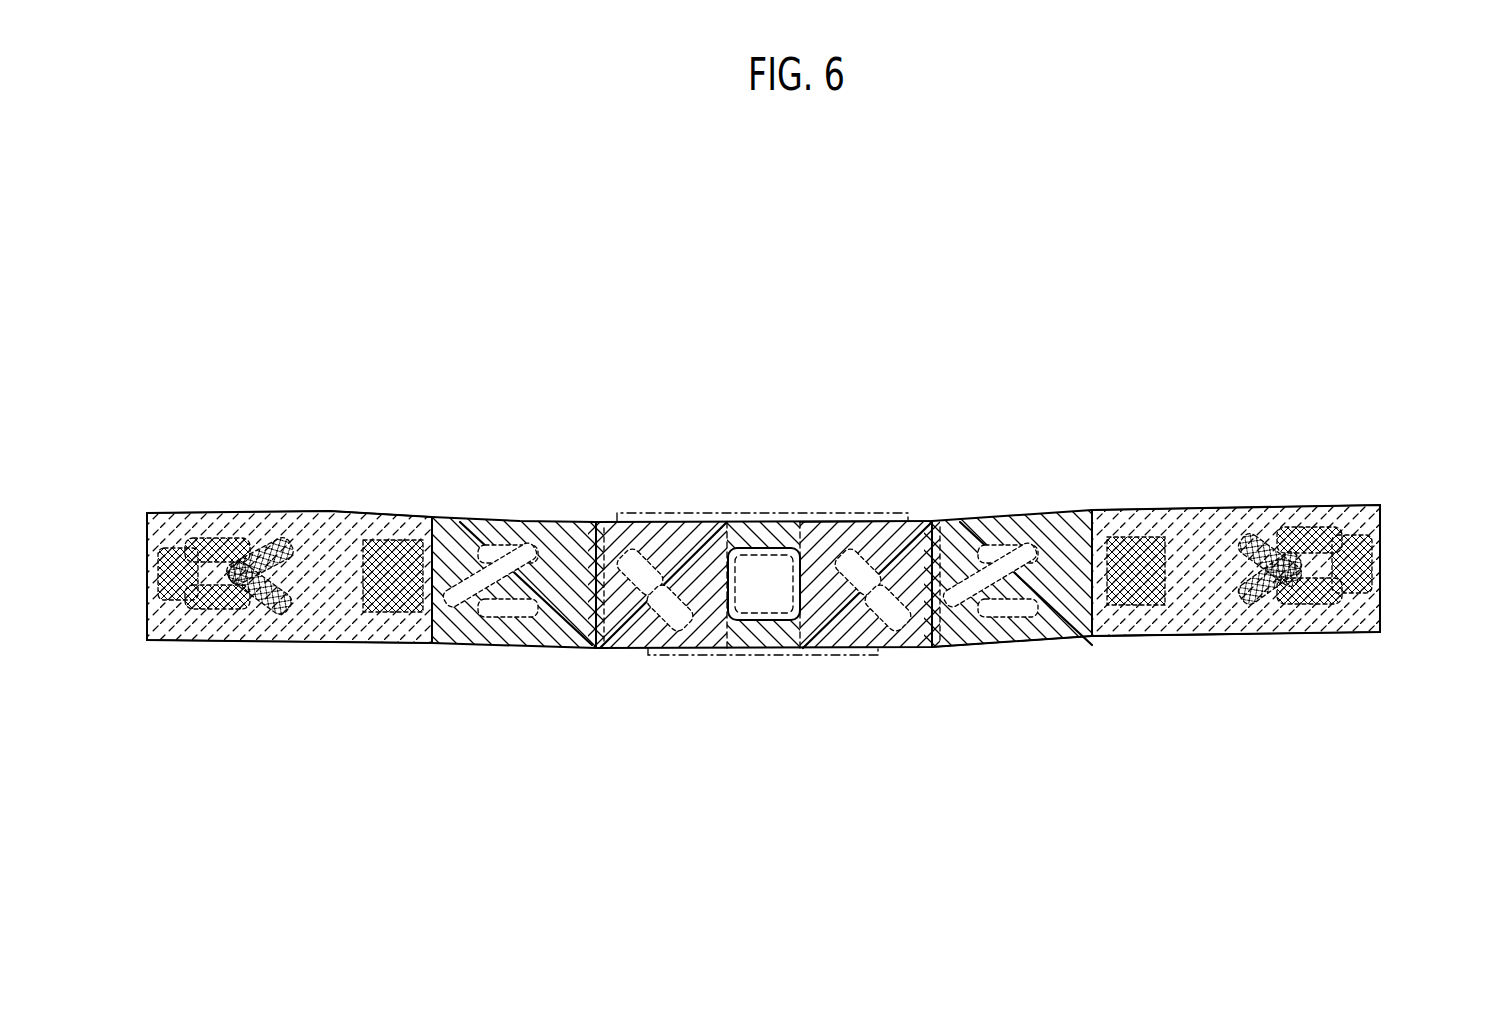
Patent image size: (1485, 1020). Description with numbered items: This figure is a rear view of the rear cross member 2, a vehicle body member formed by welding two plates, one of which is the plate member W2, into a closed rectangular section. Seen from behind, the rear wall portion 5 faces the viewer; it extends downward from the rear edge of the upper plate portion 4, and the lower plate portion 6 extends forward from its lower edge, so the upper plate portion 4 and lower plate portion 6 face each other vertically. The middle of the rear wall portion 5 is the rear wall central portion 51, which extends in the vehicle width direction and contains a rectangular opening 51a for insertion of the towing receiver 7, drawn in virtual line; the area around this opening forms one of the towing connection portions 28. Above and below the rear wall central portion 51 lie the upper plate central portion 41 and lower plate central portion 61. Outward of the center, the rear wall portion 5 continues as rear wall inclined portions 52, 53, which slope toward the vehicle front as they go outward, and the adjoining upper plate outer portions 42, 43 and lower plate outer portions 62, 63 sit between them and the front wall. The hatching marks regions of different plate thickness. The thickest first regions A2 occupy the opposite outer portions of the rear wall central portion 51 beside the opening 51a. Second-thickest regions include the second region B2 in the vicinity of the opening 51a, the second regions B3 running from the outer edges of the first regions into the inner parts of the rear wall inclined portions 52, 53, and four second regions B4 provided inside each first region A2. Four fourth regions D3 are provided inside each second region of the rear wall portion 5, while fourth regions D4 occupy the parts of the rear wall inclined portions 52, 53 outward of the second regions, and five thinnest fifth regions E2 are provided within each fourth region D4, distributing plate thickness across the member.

The rear cross member 2 is at (364, 402).
The upper plate portion 4 is at (1028, 503).
The rear wall portion 5 is at (487, 521).
The lower plate portion 6 is at (1007, 663).
The towing receiver 7 is at (818, 658).
The towing connection portions 28 is at (818, 521).
The upper plate central portion 41 is at (700, 513).
The upper plate outer portion 42 is at (322, 513).
The upper plate outer portion 43 is at (1255, 506).
The rear wall central portion 51 is at (615, 648).
The rectangular opening 51a is at (738, 592).
The rear wall inclined portion 52 is at (316, 600).
The rear wall inclined portion 53 is at (1220, 605).
The lower plate central portion 61 is at (903, 648).
The lower plate outer portion 62 is at (262, 640).
The lower plate outer portion 63 is at (1278, 633).
The first region A2 is at (605, 521).
The second region B2 is at (762, 521).
The second region B3 is at (452, 526).
The second region B4 is at (645, 521).
The fourth region D3 is at (525, 522).
The fourth region D4 is at (200, 632).
The fifth region E2 is at (232, 548).
The plate member W2 is at (1146, 650).